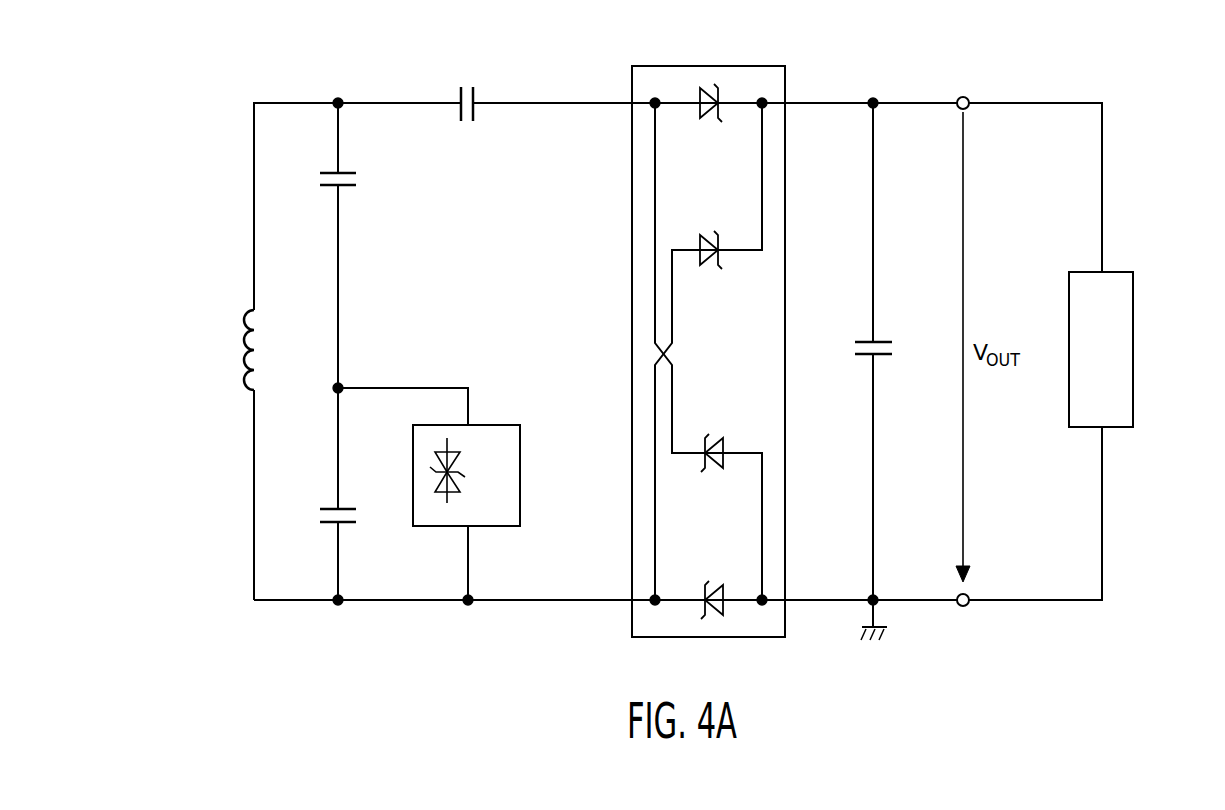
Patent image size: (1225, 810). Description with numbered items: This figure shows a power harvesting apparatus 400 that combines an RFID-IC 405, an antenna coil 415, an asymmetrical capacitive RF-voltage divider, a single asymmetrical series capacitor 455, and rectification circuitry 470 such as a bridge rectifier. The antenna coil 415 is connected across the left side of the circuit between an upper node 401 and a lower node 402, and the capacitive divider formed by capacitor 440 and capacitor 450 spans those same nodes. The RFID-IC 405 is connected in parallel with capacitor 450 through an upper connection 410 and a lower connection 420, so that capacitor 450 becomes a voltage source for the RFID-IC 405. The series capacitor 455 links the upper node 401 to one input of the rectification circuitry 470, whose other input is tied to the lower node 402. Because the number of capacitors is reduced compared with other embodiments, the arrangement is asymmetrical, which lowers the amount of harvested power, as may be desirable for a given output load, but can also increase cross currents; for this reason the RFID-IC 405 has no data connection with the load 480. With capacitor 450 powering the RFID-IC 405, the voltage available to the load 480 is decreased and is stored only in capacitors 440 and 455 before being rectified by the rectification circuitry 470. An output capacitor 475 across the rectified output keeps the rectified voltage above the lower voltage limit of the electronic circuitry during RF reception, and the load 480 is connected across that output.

The power harvesting apparatus 400 is at (1167, 120).
The first node 401 is at (336, 101).
The second node 402 is at (336, 605).
The RFID-IC 405 is at (509, 458).
The first terminal connection 410 is at (470, 425).
The antenna coil 415 is at (245, 310).
The second terminal connection 420 is at (473, 528).
The capacitor 440 is at (350, 186).
The capacitor 450 is at (336, 508).
The series capacitor 455 is at (475, 96).
The rectification circuitry 470 is at (737, 66).
The output capacitor 475 is at (870, 341).
The load 480 is at (1117, 358).